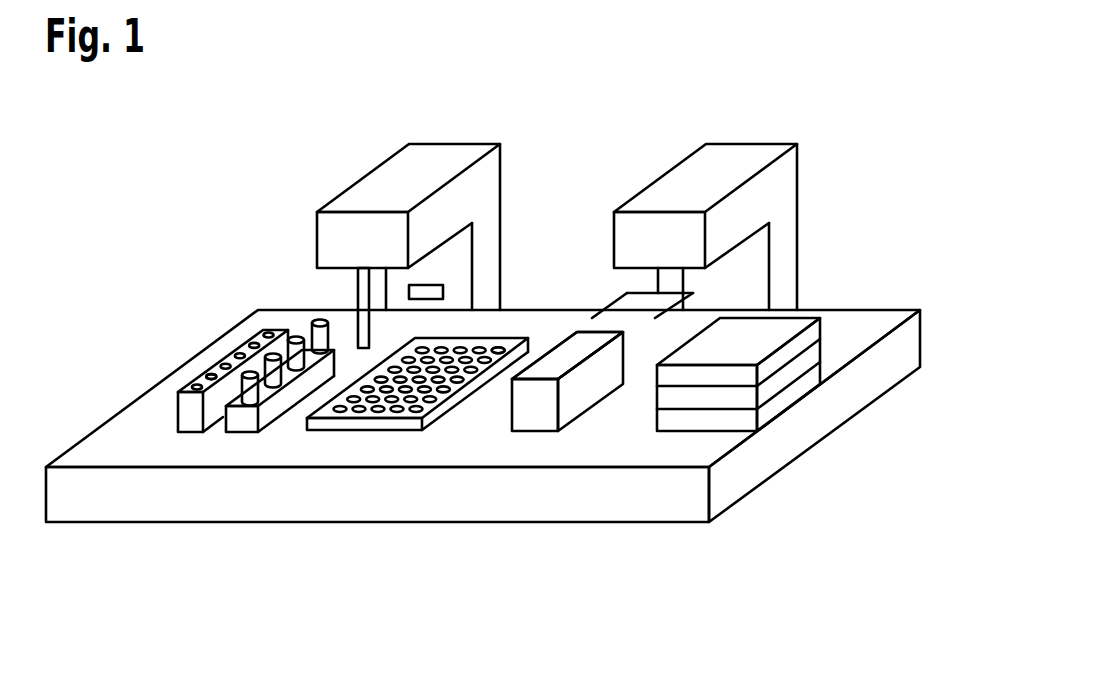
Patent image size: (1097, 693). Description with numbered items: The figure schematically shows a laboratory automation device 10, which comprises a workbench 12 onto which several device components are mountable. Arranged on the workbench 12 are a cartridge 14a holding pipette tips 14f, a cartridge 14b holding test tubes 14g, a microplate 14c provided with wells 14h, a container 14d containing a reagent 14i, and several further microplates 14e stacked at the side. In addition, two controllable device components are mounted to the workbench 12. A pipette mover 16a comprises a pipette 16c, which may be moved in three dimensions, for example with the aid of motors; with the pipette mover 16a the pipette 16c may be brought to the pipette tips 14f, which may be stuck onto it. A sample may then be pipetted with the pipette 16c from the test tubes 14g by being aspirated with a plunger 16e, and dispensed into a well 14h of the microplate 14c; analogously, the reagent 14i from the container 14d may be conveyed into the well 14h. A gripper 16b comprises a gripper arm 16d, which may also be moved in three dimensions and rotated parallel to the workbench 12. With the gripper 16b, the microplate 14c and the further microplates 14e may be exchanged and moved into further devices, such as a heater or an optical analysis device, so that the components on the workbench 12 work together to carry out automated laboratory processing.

The laboratory automation device 10 is at (867, 98).
The workbench 12 is at (602, 495).
The cartridge 14a is at (188, 422).
The cartridge 14b is at (242, 423).
The microplate 14c is at (380, 422).
The container 14d is at (533, 415).
The further microplates 14e is at (670, 415).
The pipette tips 14f is at (211, 375).
The test tubes 14g is at (276, 386).
The wells 14h is at (496, 347).
The reagent 14i is at (567, 352).
The pipette mover 16a is at (450, 157).
The gripper 16b is at (737, 157).
The pipette 16c is at (362, 297).
The gripper arm 16d is at (617, 302).
The plunger 16e is at (435, 285).